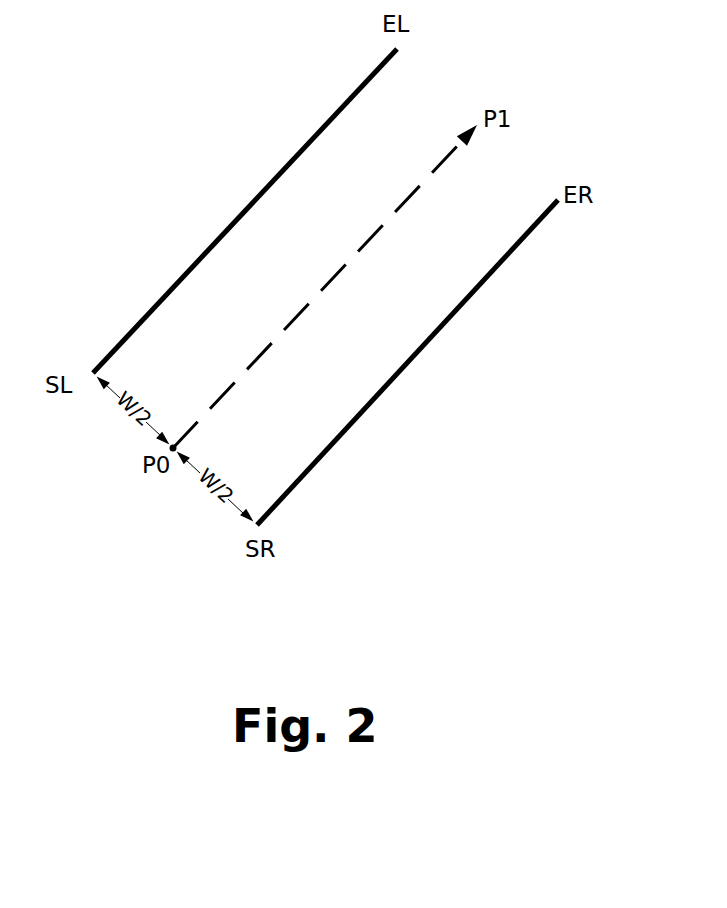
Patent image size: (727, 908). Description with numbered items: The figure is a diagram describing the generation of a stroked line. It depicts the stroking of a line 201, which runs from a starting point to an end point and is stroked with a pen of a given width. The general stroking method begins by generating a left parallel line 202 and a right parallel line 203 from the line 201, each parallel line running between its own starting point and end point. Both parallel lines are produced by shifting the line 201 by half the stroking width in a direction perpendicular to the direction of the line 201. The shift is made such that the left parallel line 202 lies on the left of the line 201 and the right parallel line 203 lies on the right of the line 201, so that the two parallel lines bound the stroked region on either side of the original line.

The line 201 is at (243, 368).
The left parallel line 202 is at (237, 215).
The right parallel line 203 is at (530, 231).